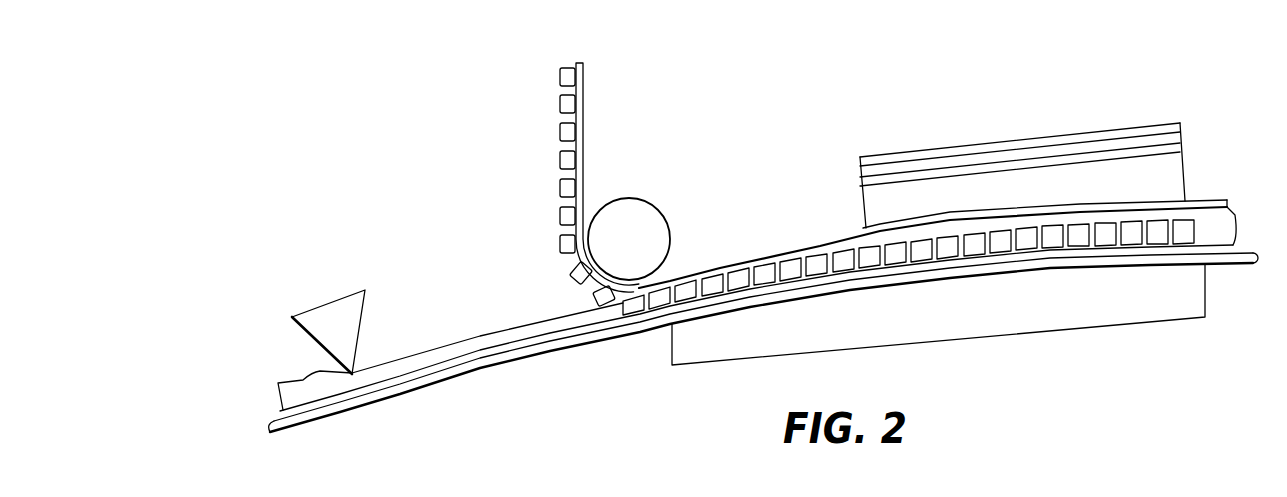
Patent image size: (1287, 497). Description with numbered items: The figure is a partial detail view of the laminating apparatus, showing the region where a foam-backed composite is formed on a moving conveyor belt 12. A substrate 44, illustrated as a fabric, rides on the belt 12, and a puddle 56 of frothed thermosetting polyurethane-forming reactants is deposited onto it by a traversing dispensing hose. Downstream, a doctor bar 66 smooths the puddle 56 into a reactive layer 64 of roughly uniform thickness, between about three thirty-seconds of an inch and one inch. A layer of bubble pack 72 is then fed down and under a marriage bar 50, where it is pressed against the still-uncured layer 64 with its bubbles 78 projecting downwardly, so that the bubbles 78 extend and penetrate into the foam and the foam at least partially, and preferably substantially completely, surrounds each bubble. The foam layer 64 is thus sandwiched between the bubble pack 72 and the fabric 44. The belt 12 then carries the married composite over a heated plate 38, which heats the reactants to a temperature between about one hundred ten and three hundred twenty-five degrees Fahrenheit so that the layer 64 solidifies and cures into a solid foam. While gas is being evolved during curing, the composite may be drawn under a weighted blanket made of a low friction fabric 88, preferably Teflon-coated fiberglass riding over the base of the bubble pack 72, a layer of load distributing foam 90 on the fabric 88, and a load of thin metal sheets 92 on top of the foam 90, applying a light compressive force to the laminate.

The conveyor belt 12 is at (400, 388).
The substrate 44 is at (525, 346).
The reactive layer 64 is at (472, 345).
The puddle 56 is at (302, 380).
The doctor bar 66 is at (338, 310).
The marriage bar 50 is at (648, 223).
The bubble pack 72 is at (549, 155).
The bubbles 78 is at (559, 76).
The low friction fabric 88 is at (1157, 197).
The load distributing foam 90 is at (878, 207).
The thin metal sheets 92 is at (968, 134).
The heated plate 38 is at (1018, 320).